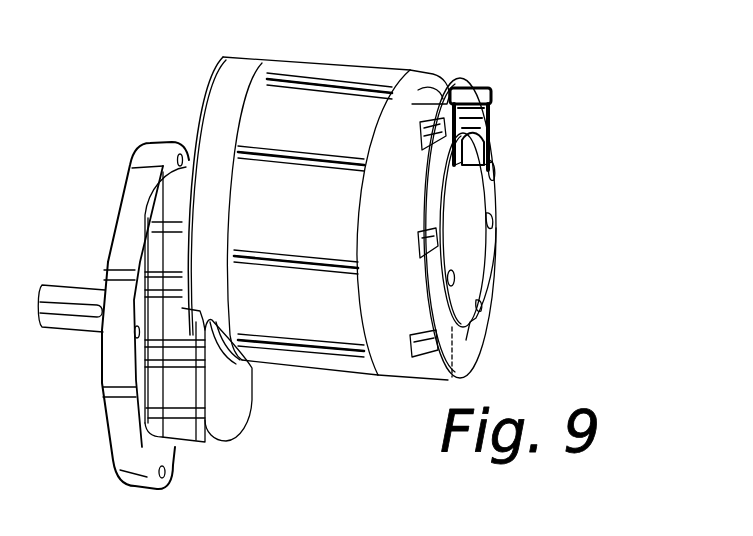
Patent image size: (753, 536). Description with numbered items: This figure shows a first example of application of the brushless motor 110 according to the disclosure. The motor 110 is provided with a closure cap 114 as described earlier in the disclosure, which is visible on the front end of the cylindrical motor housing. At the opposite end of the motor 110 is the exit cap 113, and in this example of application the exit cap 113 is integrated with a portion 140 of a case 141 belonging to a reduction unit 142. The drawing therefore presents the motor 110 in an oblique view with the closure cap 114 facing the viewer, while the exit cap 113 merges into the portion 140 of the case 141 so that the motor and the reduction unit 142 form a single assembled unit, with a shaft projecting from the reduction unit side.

The brushless motor 110 is at (559, 127).
The exit cap 113 is at (223, 102).
The closure cap 114 is at (497, 259).
The portion 140 is at (238, 387).
The case 141 is at (196, 449).
The reduction unit 142 is at (86, 254).